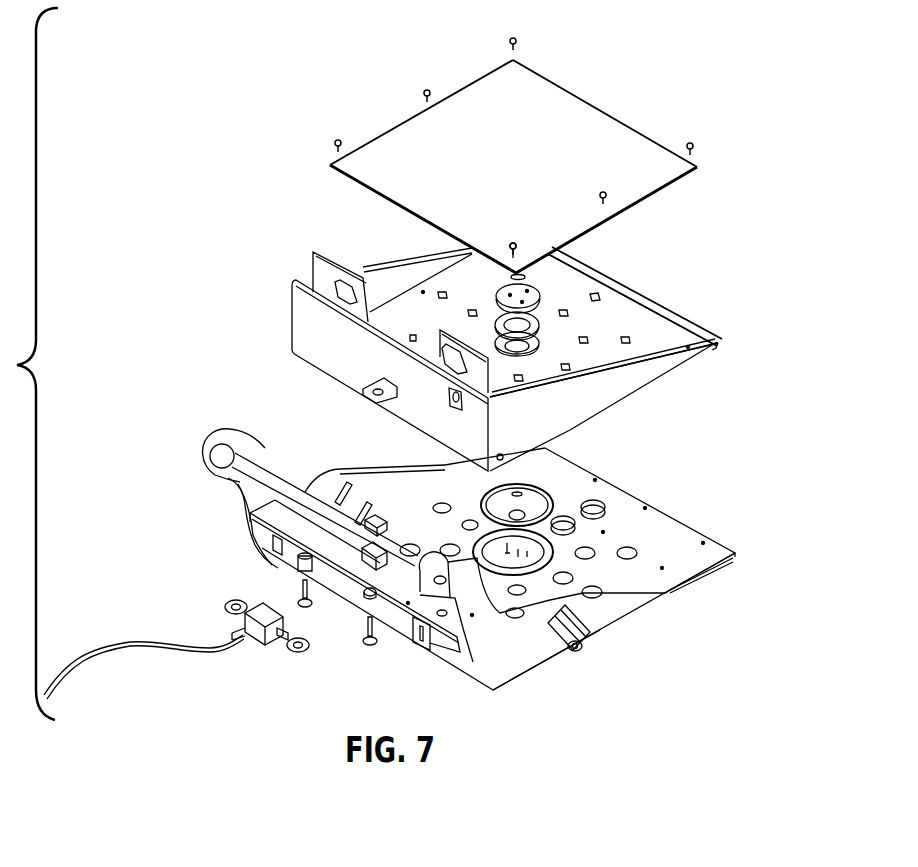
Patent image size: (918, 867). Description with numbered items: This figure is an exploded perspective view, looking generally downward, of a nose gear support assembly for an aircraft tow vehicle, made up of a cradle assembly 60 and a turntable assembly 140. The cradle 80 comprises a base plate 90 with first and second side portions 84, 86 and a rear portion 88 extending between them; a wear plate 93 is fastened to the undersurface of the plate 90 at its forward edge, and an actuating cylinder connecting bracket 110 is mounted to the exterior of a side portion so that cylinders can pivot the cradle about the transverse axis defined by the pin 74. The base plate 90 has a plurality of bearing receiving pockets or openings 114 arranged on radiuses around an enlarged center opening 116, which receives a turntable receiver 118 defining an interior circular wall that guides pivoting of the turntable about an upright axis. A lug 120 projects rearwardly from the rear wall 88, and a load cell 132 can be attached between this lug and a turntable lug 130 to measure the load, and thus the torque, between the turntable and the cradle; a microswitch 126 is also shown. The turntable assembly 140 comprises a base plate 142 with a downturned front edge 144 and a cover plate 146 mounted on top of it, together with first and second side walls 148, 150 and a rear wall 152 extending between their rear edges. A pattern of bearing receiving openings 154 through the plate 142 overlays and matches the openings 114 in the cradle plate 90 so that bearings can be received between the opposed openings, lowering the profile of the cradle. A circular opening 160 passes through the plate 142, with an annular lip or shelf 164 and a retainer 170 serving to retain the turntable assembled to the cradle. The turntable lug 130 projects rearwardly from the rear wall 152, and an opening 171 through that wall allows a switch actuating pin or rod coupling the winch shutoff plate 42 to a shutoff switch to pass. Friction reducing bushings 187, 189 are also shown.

The shutoff plate 42 is at (322, 266).
The cradle assembly 60 is at (699, 497).
The pin 74 is at (258, 490).
The cradle 80 is at (523, 582).
The first side portion 84 is at (333, 490).
The second side portion 86 is at (522, 663).
The rear portion 88 is at (400, 617).
The base plate portion 90 is at (726, 560).
The wear plate 93 is at (716, 580).
The actuating cylinder connecting bracket 110 is at (580, 648).
The bearing receiving pockets 114 is at (625, 562).
The center opening 116 is at (537, 552).
The turntable receiver 118 is at (590, 632).
The lug 120 is at (298, 563).
The microswitch 126 is at (422, 652).
The turntable lug 130 is at (367, 398).
The load cell 132 is at (267, 648).
The turntable assembly 140 is at (743, 299).
The base plate portion 142 is at (694, 353).
The downturned front edge 144 is at (708, 331).
The cover plate 146 is at (637, 147).
The first side wall 148 is at (380, 258).
The second side wall 150 is at (506, 339).
The rear wall 152 is at (367, 352).
The bearing receiving openings 154 is at (667, 314).
The circular opening 160 is at (538, 348).
The annular lip 164 is at (542, 326).
The retainer 170 is at (545, 282).
The opening 171 is at (450, 402).
The bushing 187 is at (548, 497).
The bushing 189 is at (600, 287).